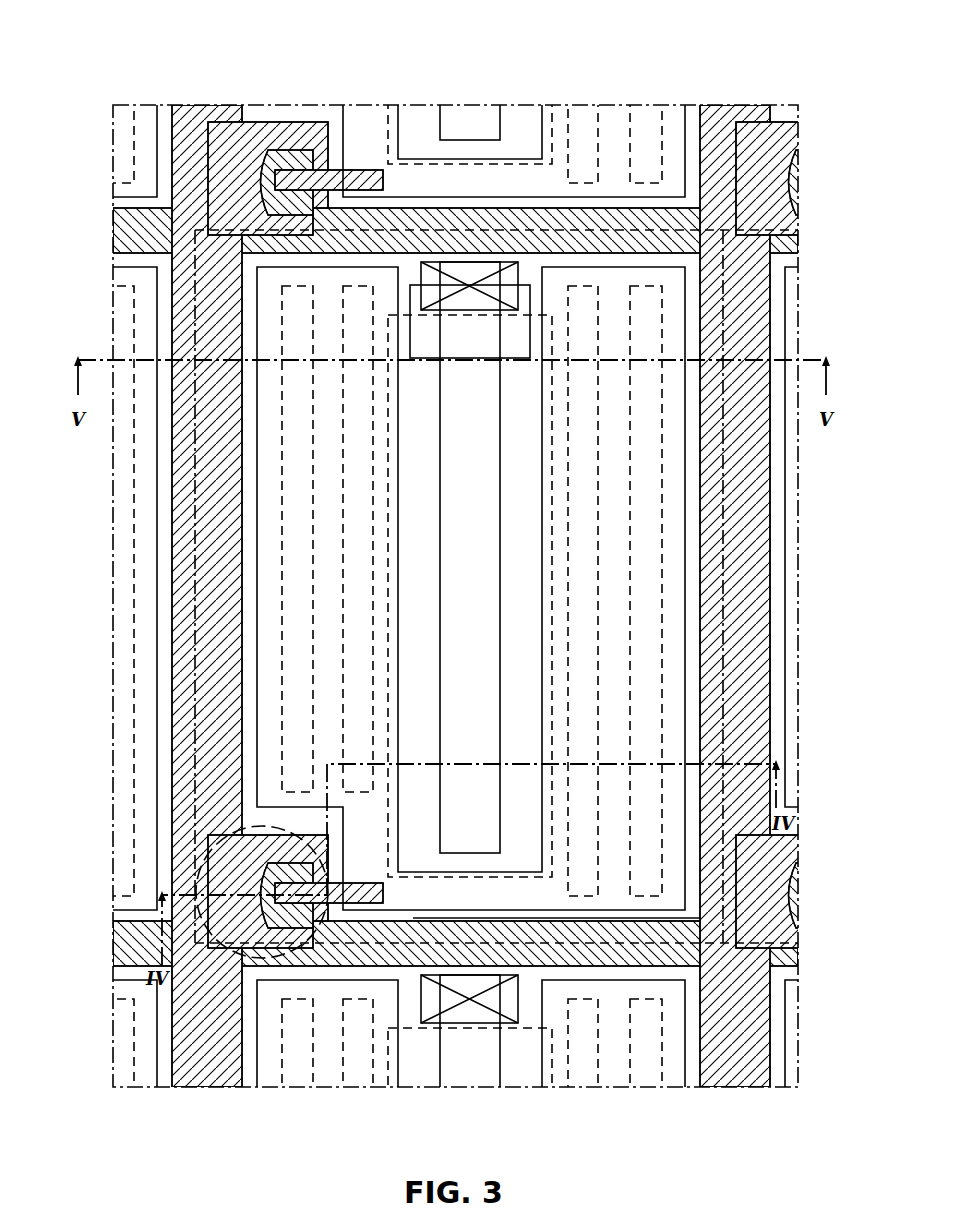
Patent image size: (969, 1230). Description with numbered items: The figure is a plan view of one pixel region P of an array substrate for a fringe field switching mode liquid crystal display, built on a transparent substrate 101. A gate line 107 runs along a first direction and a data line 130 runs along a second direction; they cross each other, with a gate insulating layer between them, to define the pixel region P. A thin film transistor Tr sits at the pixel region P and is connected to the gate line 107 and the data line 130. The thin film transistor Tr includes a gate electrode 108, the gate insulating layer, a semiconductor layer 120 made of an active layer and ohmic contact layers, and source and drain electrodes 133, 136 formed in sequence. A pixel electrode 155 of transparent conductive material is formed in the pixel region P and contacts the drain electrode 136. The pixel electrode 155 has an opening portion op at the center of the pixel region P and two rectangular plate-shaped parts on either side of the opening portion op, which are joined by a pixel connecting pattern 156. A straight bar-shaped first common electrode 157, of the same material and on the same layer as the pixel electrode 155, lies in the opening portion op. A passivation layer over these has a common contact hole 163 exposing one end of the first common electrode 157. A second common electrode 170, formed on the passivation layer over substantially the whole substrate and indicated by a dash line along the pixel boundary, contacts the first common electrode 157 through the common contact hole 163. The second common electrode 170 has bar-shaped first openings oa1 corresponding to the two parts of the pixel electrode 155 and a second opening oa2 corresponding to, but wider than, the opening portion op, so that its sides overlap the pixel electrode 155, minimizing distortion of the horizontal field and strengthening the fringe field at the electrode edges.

The transparent substrate 101 is at (737, 93).
The gate line 107 is at (120, 944).
The gate electrode 108 is at (275, 836).
The semiconductor layer 120 is at (285, 960).
The data line 130 is at (200, 529).
The source electrode 133 is at (265, 968).
The drain electrode 136 is at (322, 955).
The pixel electrode 155 is at (270, 590).
The pixel connecting pattern 156 is at (553, 942).
The first common electrode 157 is at (485, 431).
The common contact hole 163 is at (484, 268).
The second common electrode 170 is at (193, 322).
The pixel region P is at (250, 483).
The thin film transistor Tr is at (245, 960).
The first openings oa1 is at (286, 416).
The second opening oa2 is at (552, 593).
The opening portion op is at (532, 534).